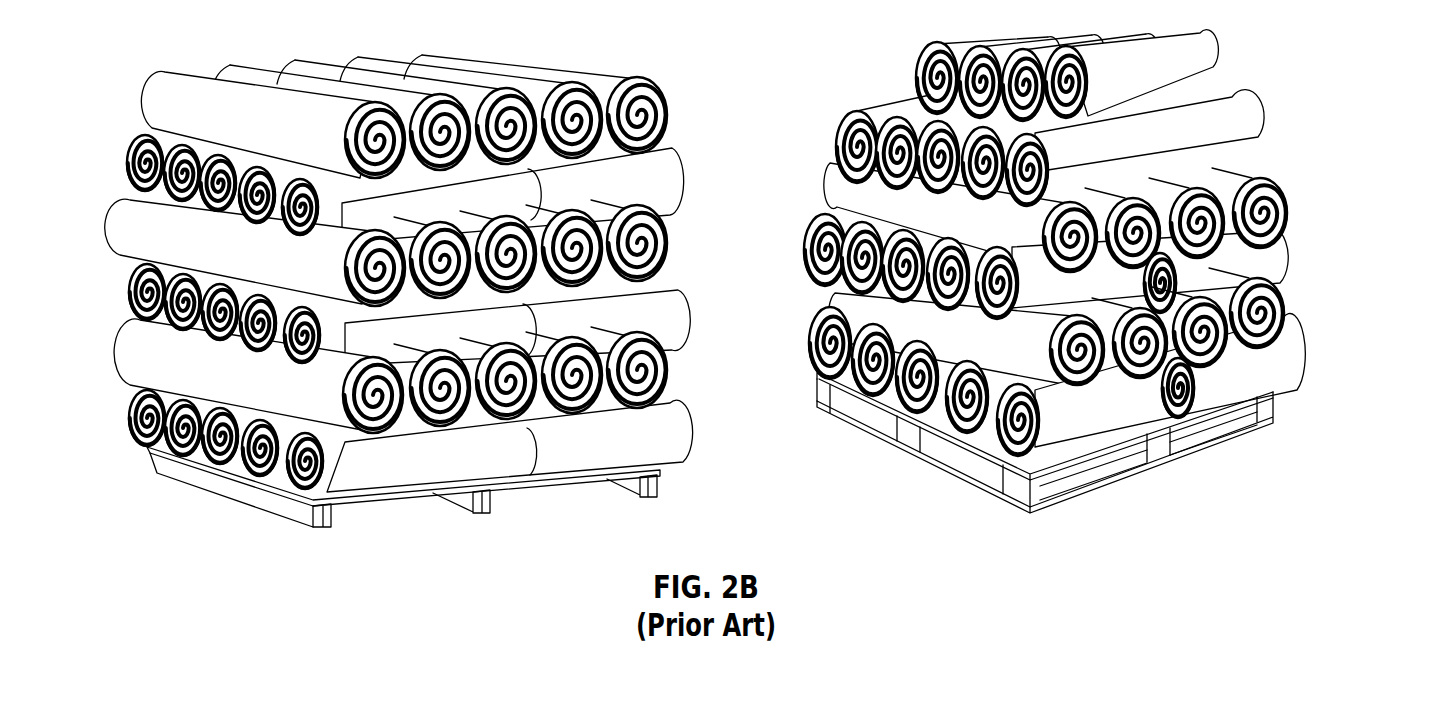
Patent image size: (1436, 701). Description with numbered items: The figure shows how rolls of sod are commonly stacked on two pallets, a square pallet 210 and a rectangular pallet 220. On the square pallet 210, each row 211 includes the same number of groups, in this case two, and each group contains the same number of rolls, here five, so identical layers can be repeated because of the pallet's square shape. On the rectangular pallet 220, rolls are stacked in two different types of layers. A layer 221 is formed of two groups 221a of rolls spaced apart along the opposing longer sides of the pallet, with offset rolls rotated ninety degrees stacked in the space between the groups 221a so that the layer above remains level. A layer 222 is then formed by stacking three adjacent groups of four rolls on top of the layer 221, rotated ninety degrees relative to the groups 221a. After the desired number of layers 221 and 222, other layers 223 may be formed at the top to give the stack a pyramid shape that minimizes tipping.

The pallet 210 is at (313, 529).
The row 211 is at (364, 327).
The pallet 220 is at (1272, 405).
The layer 221 is at (1066, 340).
The group 221a is at (1303, 367).
The layer 222 is at (833, 178).
The other layer 223 is at (878, 66).